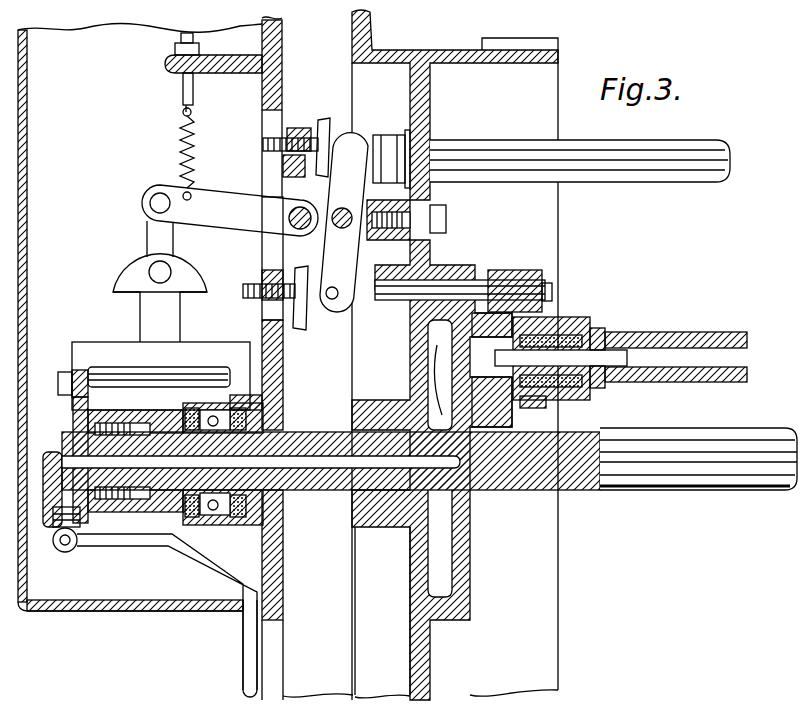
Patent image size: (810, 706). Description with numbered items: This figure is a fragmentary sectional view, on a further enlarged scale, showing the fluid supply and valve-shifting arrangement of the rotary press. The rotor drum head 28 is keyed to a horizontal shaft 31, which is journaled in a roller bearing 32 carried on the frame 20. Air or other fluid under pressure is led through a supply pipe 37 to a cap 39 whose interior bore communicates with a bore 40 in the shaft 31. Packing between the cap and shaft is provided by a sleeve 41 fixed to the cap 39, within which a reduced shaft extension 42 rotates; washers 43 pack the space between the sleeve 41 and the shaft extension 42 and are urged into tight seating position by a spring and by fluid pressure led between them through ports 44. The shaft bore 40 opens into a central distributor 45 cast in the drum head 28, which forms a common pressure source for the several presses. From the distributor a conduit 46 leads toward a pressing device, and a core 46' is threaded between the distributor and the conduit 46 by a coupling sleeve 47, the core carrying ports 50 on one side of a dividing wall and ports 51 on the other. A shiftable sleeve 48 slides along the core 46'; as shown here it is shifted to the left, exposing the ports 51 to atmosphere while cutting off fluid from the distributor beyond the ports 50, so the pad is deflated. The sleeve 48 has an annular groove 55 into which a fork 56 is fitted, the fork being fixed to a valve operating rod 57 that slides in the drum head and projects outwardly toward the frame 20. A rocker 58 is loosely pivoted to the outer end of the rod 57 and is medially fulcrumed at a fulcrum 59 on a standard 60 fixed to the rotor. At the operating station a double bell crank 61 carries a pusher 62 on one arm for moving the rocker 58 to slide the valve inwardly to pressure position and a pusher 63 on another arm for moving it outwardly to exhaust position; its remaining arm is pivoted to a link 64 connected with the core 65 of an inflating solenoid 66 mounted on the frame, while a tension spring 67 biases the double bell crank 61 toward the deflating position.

The frame 20 is at (274, 80).
The drum head 28 is at (437, 50).
The horizontal shaft 31 is at (627, 468).
The roller bearing 32 is at (205, 517).
The supply pipe 37 is at (247, 678).
The cap 39 is at (75, 450).
The bore 40 is at (300, 462).
The sleeve 41 is at (130, 520).
The shaft extension 42 is at (118, 432).
The washers 43 is at (150, 432).
The ports 44 is at (68, 425).
The central distributor 45 is at (443, 543).
The conduit 46 is at (676, 342).
The core 46' is at (496, 370).
The coupling sleeve 47 is at (572, 328).
The shiftable sleeve 48 is at (546, 320).
The ports 50 is at (600, 355).
The ports 51 is at (606, 346).
The annular groove 55 is at (524, 398).
The fork 56 is at (522, 305).
The valve operating rod 57 is at (441, 290).
The rocker 58 is at (350, 258).
The fulcrum 59 is at (336, 229).
The standard 60 is at (396, 212).
The double bell crank 61 is at (226, 200).
The pusher 62 is at (303, 327).
The pusher 63 is at (320, 125).
The link 64 is at (150, 240).
The core 65 is at (144, 298).
The inflating solenoid 66 is at (110, 352).
The tension spring 67 is at (182, 150).